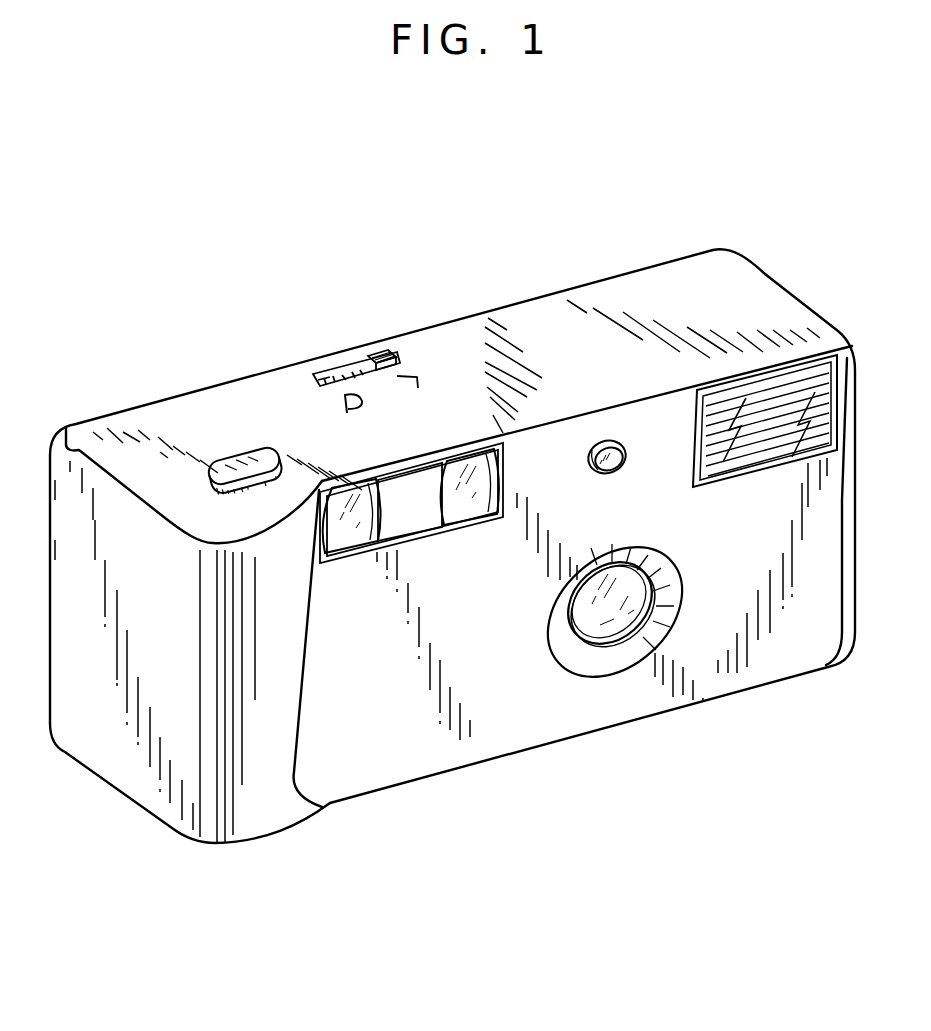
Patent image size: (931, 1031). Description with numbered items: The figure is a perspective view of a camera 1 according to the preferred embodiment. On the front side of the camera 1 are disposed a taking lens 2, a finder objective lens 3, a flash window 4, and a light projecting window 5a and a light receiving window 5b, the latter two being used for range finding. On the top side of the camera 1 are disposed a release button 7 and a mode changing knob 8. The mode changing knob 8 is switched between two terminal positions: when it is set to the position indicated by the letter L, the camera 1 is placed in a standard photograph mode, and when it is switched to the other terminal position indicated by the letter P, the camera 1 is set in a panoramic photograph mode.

The camera 1 is at (630, 256).
The taking lens 2 is at (613, 634).
The finder objective lens 3 is at (607, 440).
The flash window 4 is at (765, 445).
The light projecting window 5a is at (348, 542).
The light receiving window 5b is at (470, 510).
The release button 7 is at (243, 462).
The mode changing knob 8 is at (382, 350).